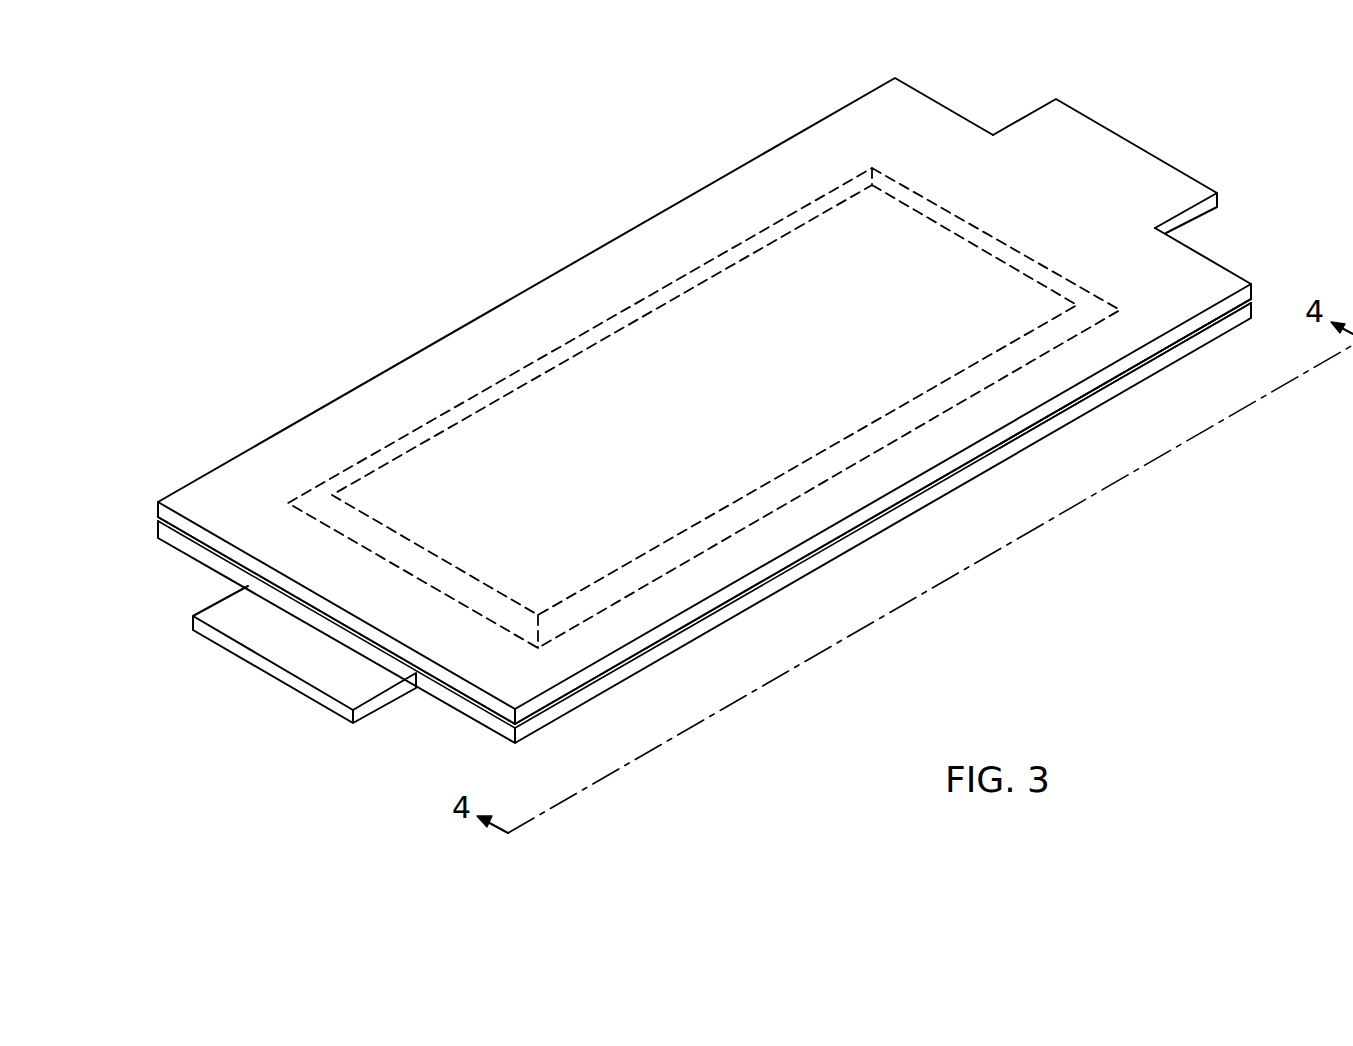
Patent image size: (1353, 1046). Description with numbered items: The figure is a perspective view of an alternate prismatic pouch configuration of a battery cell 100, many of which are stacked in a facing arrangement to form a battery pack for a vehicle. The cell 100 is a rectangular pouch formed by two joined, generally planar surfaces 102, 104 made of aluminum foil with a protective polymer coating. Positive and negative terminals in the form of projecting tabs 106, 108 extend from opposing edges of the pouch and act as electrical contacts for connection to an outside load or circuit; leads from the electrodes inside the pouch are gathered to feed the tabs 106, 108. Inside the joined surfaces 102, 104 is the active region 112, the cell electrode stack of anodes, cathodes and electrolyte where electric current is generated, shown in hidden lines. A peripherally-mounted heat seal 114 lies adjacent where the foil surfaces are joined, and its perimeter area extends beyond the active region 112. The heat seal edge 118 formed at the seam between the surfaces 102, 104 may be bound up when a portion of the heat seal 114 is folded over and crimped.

The battery cell 100 is at (488, 191).
The planar surface 102 is at (183, 497).
The planar surface 104 is at (172, 545).
The tab 106 is at (262, 662).
The tab 108 is at (1127, 148).
The active region 112 is at (917, 222).
The heat seal 114 is at (1093, 357).
The heat seal edge 118 is at (160, 525).